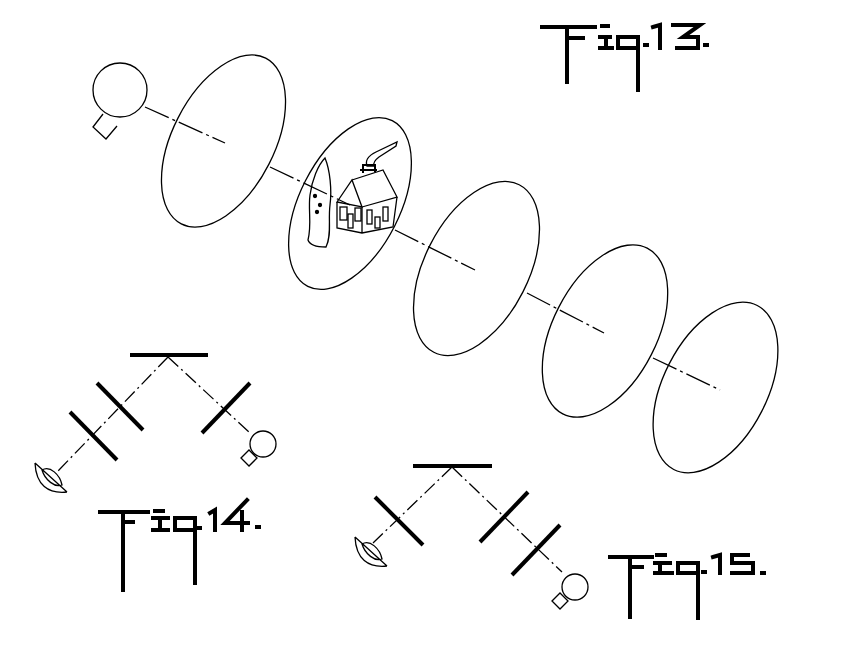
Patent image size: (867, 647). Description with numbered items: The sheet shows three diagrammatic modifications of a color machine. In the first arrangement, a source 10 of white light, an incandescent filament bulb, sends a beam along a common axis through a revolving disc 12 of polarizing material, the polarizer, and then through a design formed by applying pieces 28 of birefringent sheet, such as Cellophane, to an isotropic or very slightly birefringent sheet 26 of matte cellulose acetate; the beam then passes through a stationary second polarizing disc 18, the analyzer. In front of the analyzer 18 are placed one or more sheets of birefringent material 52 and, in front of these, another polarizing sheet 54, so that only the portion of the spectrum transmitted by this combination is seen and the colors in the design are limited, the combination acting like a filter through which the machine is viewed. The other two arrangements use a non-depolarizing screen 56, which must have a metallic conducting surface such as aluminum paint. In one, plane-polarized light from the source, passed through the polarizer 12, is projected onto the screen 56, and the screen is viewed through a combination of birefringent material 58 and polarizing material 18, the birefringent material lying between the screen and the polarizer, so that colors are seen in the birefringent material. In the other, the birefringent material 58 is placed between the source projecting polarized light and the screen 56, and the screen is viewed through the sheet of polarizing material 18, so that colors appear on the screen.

In FIG. 13, the source of white light 10 is at (131, 75).
In FIG. 13, the revolving disc of polarizing material 12 is at (263, 77).
In FIG. 14, the revolving disc of polarizing material 12 is at (243, 395).
In FIG. 15, the revolving disc of polarizing material 12 is at (553, 533).
In FIG. 13, the isotropic sheet 26 is at (368, 132).
In FIG. 13, the pieces of birefringent sheet 28 is at (377, 187).
In FIG. 13, the analyzer 18 is at (507, 200).
In FIG. 14, the analyzer 18 is at (73, 412).
In FIG. 15, the analyzer 18 is at (383, 495).
In FIG. 13, the sheets of birefringent material 52 is at (635, 250).
In FIG. 13, the polarizing sheet 54 is at (732, 313).
In FIG. 14, the non-depolarizing screen 56 is at (140, 355).
In FIG. 15, the non-depolarizing screen 56 is at (425, 465).
In FIG. 14, the birefringent material 58 is at (106, 380).
In FIG. 15, the birefringent material 58 is at (522, 500).